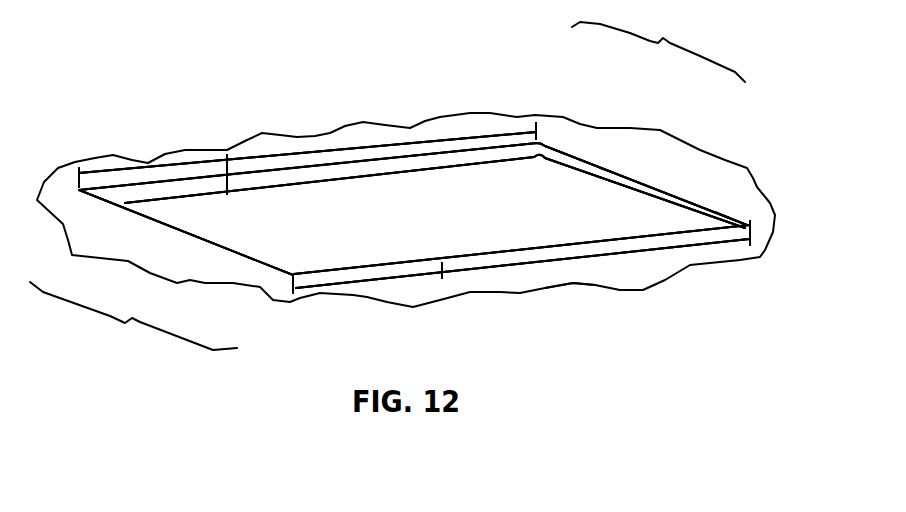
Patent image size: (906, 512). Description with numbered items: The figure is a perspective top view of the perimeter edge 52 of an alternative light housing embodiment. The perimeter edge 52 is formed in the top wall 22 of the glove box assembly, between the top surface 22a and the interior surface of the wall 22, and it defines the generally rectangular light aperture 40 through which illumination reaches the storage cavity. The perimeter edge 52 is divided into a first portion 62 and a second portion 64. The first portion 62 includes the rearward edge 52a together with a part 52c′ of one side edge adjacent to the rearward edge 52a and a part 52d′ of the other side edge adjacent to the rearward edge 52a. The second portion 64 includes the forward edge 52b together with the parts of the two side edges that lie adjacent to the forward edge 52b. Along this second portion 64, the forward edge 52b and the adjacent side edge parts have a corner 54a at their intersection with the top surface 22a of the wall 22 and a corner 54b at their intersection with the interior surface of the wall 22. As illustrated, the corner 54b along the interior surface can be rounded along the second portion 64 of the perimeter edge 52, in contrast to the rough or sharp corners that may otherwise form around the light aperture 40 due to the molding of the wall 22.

The top wall 22 is at (517, 275).
The top surface 22a is at (647, 281).
The light aperture 40 is at (472, 180).
The perimeter edge 52 is at (192, 190).
The rearward edge 52a is at (270, 263).
The forward edge 52b is at (648, 190).
The part of side edge 52c′ is at (349, 278).
The part of side edge 52d′ is at (127, 173).
The corner 54a is at (723, 220).
The corner 54b is at (618, 177).
The first portion 62 is at (133, 317).
The second portion 64 is at (658, 48).